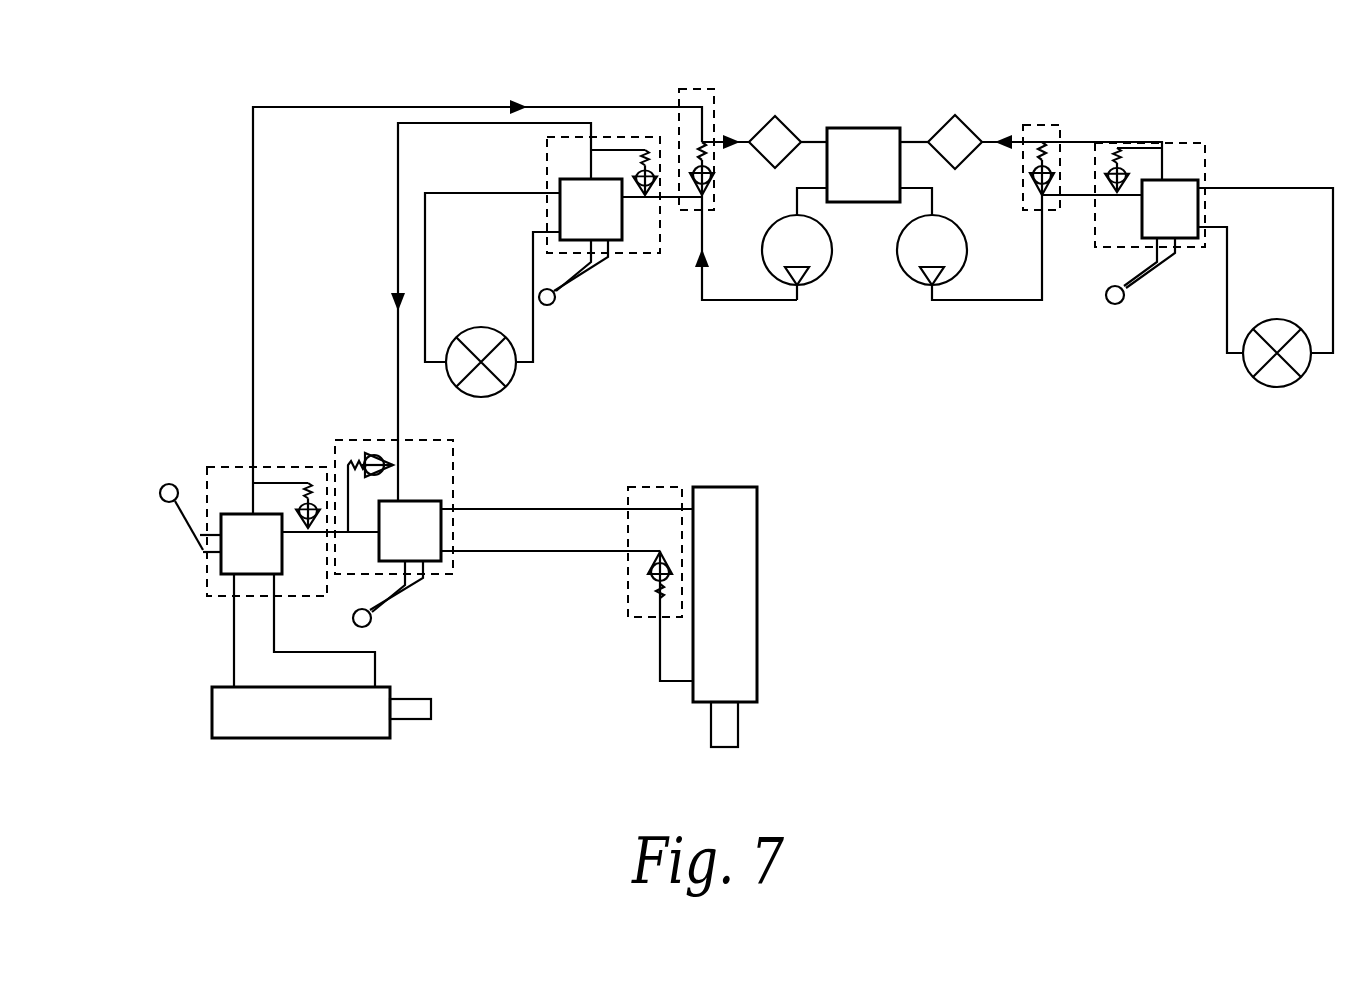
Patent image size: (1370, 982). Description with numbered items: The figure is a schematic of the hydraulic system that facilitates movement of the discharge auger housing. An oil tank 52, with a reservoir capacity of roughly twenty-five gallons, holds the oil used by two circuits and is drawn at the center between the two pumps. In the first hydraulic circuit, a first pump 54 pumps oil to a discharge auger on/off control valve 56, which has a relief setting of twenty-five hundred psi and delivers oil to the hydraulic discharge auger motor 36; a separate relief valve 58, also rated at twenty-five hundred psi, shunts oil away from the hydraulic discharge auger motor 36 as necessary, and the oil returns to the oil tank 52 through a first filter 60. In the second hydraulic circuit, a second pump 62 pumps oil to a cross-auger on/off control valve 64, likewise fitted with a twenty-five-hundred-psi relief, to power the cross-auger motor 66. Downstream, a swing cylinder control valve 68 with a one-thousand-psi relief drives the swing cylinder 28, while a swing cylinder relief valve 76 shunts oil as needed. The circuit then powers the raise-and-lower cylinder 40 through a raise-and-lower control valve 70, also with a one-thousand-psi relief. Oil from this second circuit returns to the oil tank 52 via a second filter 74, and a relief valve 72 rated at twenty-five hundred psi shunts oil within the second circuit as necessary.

The swing cylinder 28 is at (760, 587).
The hydraulic discharge auger motor 36 is at (1275, 388).
The raise-and-lower cylinder 40 is at (325, 738).
The oil tank 52 is at (874, 128).
The first pump 54 is at (906, 285).
The discharge auger on/off control valve 56 is at (1192, 143).
The relief valve 58 is at (1050, 125).
The first filter 60 is at (945, 117).
The second pump 62 is at (808, 285).
The cross-auger on/off control valve 64 is at (634, 253).
The cross-auger motor 66 is at (513, 380).
The swing cylinder control valve 68 is at (455, 478).
The raise-and-lower control valve 70 is at (232, 467).
The relief valve 72 is at (698, 88).
The second filter 74 is at (790, 127).
The swing cylinder relief valve 76 is at (628, 603).